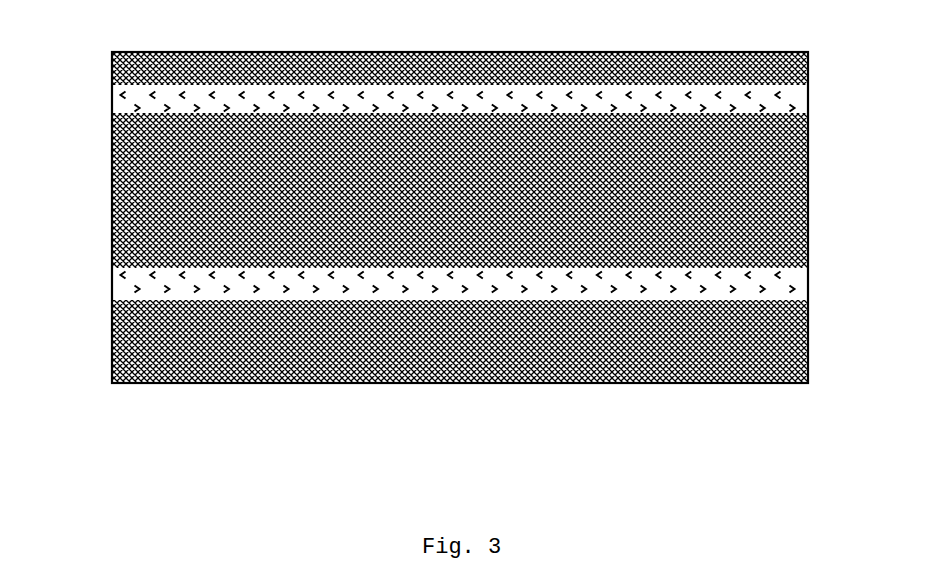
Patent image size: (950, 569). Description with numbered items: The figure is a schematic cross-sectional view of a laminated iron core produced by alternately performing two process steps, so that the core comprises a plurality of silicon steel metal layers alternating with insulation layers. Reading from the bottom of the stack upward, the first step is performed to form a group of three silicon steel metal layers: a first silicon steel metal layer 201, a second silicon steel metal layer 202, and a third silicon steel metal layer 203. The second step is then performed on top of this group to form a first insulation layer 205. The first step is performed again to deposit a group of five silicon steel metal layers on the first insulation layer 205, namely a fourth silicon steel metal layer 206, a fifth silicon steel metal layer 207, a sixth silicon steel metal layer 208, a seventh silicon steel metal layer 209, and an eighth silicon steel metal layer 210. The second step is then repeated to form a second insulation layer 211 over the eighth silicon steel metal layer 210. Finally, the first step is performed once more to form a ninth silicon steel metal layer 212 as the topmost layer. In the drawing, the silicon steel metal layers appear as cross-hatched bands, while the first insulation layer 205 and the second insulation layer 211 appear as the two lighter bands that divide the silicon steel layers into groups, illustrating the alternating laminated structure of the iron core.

The first silicon steel metal layer 201 is at (808, 371).
The second silicon steel metal layer 202 is at (808, 345).
The third silicon steel metal layer 203 is at (808, 313).
The first insulation layer 205 is at (134, 288).
The fourth silicon steel metal layer 206 is at (808, 258).
The fifth silicon steel metal layer 207 is at (808, 215).
The sixth silicon steel metal layer 208 is at (808, 182).
The seventh silicon steel metal layer 209 is at (808, 150).
The eighth silicon steel metal layer 210 is at (808, 128).
The second insulation layer 211 is at (134, 107).
The ninth silicon steel metal layer 212 is at (808, 68).